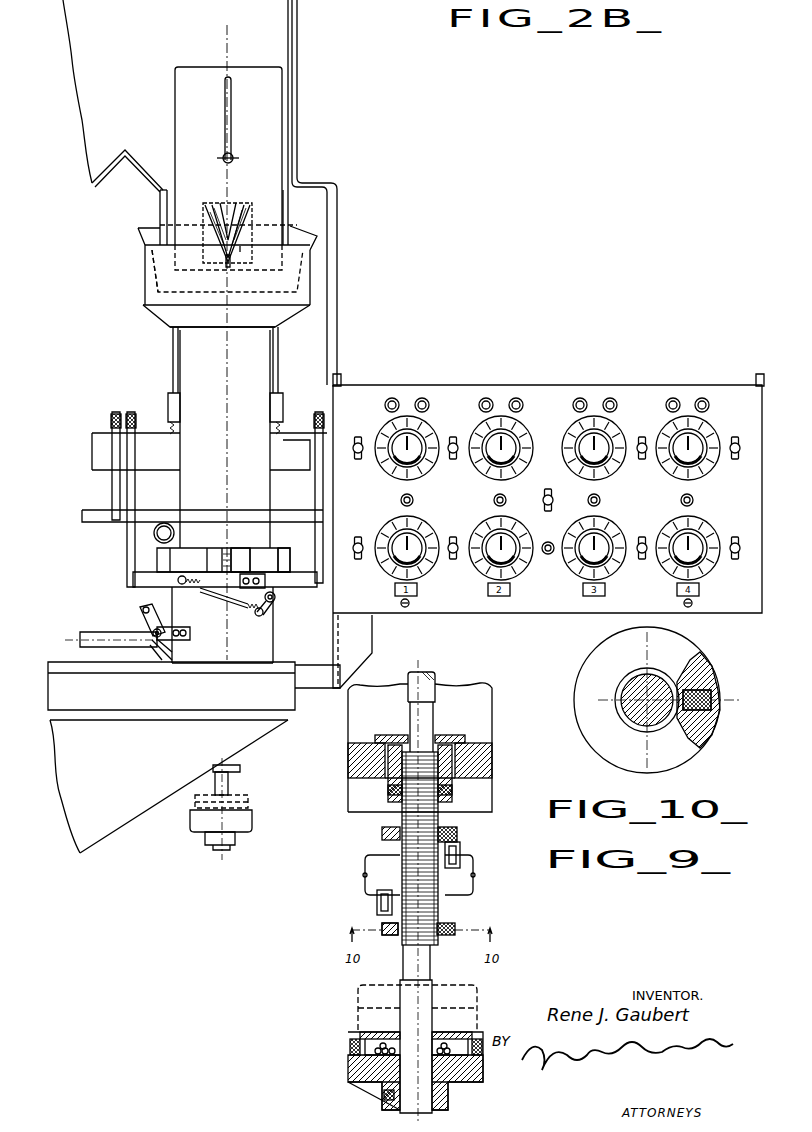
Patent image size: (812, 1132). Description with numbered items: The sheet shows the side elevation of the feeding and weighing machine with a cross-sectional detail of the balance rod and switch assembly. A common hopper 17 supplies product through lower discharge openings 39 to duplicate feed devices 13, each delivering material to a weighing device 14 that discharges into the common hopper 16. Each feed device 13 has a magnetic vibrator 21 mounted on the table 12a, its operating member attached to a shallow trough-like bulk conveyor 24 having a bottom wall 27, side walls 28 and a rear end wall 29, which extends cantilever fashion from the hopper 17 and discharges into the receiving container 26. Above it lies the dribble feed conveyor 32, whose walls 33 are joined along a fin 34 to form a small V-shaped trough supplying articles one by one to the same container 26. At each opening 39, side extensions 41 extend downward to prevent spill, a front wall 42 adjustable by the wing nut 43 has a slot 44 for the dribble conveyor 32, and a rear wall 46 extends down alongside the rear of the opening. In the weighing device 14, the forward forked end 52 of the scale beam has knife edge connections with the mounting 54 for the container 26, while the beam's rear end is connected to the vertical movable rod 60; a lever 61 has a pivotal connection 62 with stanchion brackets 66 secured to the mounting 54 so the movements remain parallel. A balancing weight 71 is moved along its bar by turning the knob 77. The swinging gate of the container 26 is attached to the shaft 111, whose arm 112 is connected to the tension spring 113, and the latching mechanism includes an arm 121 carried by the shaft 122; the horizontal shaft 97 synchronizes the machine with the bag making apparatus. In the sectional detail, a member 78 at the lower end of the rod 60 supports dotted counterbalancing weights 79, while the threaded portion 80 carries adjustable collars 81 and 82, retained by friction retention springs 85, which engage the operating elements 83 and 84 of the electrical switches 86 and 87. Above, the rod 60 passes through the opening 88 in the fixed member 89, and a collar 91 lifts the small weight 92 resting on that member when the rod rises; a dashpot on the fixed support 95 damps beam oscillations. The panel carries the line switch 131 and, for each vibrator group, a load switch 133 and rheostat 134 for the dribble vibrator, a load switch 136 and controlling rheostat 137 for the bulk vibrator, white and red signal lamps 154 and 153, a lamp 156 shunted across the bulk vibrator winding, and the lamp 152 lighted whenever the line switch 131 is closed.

In FIG. 2B, the common hopper 17 is at (288, 27).
In FIG. 2B, the front wall 42 is at (286, 103).
In FIG. 2B, the slot 44 is at (232, 103).
In FIG. 2B, the wing nut 43 is at (233, 153).
In FIG. 2B, the side extensions 41 is at (160, 207).
In FIG. 2B, the lower discharge openings 39 is at (162, 193).
In FIG. 2B, the rear end wall 29 is at (150, 228).
In FIG. 2B, the feed device 13 is at (326, 249).
In FIG. 2B, the receiving container 26 is at (160, 318).
In FIG. 2B, the bottom wall 27 is at (203, 299).
In FIG. 2B, the bulk conveyor 24 is at (155, 287).
In FIG. 2B, the side walls 28 is at (158, 271).
In FIG. 2B, the dribble feed conveyor 32 is at (241, 210).
In FIG. 2B, the walls 33 is at (222, 210).
In FIG. 2B, the fin 34 is at (222, 261).
In FIG. 2B, the rear wall 46 is at (240, 256).
In FIG. 2B, the magnetic vibrator 21 is at (280, 410).
In FIG. 2B, the table 12a is at (95, 460).
In FIG. 2B, the lever 61 is at (116, 418).
In FIG. 2B, the pivotal connection 62 is at (134, 420).
In FIG. 2B, the weighing device 14 is at (74, 536).
In FIG. 2B, the knob 77 is at (171, 535).
In FIG. 2B, the balancing weight 71 is at (157, 553).
In FIG. 2B, the mounting 54 is at (253, 555).
In FIG. 2B, the forward forked end 52 is at (288, 557).
In FIG. 2B, the stanchion brackets 66 is at (130, 568).
In FIG. 2B, the tension spring 113 is at (192, 591).
In FIG. 2B, the shaft 111 is at (276, 598).
In FIG. 2B, the arm 112 is at (260, 617).
In FIG. 2B, the arm 121 is at (143, 625).
In FIG. 2B, the shaft 122 is at (150, 640).
In FIG. 2B, the horizontal shaft 97 is at (100, 633).
In FIG. 2B, the common hopper 16 is at (100, 838).
In FIG. 2B, the adjustable collar 82 is at (240, 768).
In FIG. 9, the adjustable collar 82 is at (385, 937).
In FIG. 10, the adjustable collar 82 is at (576, 700).
In FIG. 2B, the rod 60 is at (229, 785).
In FIG. 9, the rod 60 is at (432, 686).
In FIG. 10, the rod 60 is at (638, 728).
In FIG. 2B, the counterbalancing weights 79 is at (250, 803).
In FIG. 9, the counterbalancing weights 79 is at (358, 1008).
In FIG. 2B, the member 78 is at (252, 825).
In FIG. 9, the member 78 is at (350, 1075).
In FIG. 2B, the rheostat 134 is at (428, 435).
In FIG. 2B, the controlling rheostat 137 is at (424, 536).
In FIG. 2B, the signal lamp 154 is at (393, 398).
In FIG. 2B, the signal lamp 153 is at (423, 398).
In FIG. 2B, the load switch 133 is at (359, 437).
In FIG. 2B, the load switch 136 is at (362, 530).
In FIG. 2B, the line switch 131 is at (552, 484).
In FIG. 2B, the signal lamp 156 is at (400, 500).
In FIG. 2B, the signal lamp 152 is at (549, 555).
In FIG. 9, the fixed support 95 is at (483, 690).
In FIG. 9, the fixed member 89 is at (492, 753).
In FIG. 9, the small weight 92 is at (455, 738).
In FIG. 9, the adjustable collar 91 is at (390, 781).
In FIG. 9, the opening 88 is at (455, 768).
In FIG. 9, the threaded portion 80 is at (402, 853).
In FIG. 10, the threaded portion 80 is at (622, 721).
In FIG. 9, the adjustable collar 81 is at (382, 835).
In FIG. 9, the friction retention spring 85 is at (457, 832).
In FIG. 10, the friction retention spring 85 is at (712, 686).
In FIG. 9, the operating element 83 is at (460, 850).
In FIG. 9, the electrical switch 86 is at (473, 870).
In FIG. 9, the electrical switch 87 is at (368, 886).
In FIG. 9, the operating element 84 is at (377, 908).